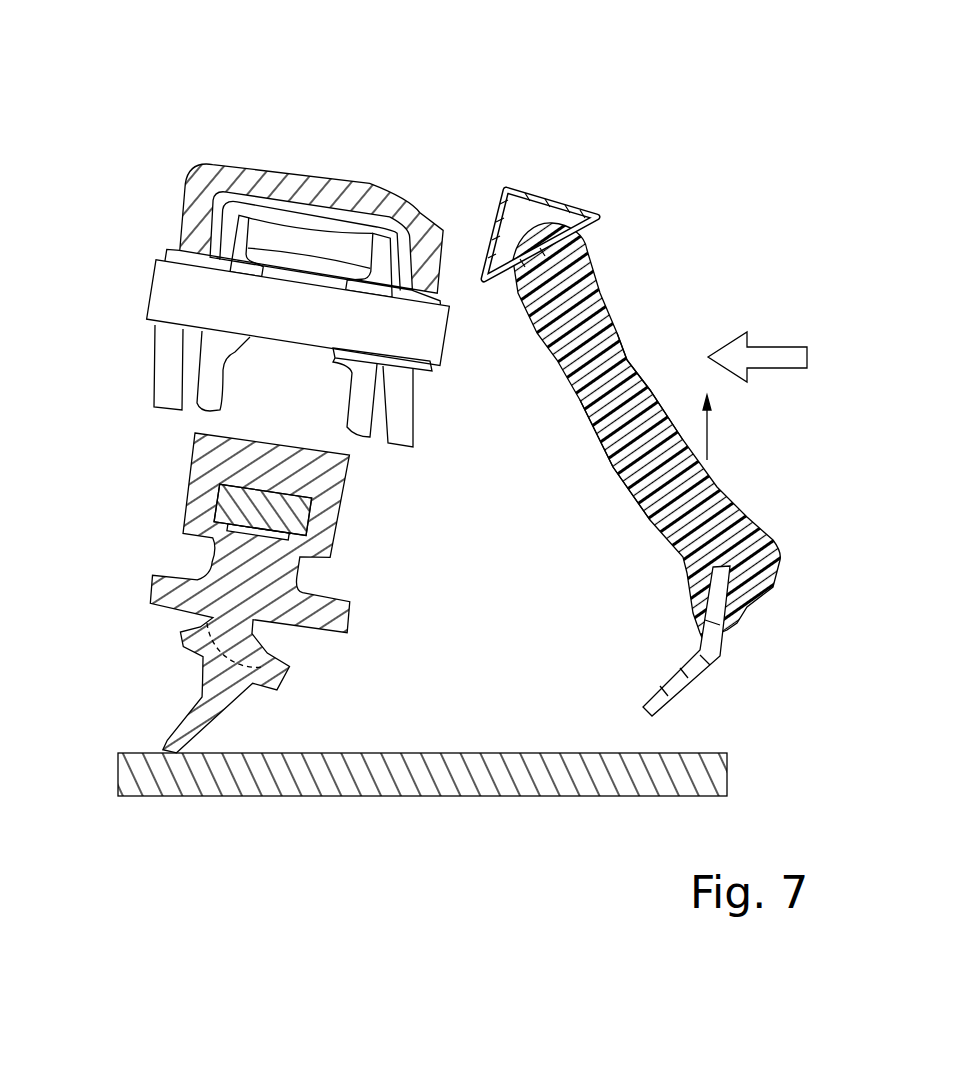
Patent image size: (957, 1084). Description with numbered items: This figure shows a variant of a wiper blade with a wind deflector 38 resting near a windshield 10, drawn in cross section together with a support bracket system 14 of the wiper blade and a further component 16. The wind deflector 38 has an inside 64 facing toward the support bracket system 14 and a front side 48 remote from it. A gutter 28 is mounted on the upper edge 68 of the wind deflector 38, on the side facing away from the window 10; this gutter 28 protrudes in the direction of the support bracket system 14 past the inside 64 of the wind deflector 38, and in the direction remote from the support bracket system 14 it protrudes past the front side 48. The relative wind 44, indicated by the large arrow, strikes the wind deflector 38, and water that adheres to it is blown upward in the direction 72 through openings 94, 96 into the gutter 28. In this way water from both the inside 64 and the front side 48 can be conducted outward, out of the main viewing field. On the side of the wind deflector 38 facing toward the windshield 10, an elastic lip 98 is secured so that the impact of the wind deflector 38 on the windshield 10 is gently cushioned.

The windshield 10 is at (157, 770).
The support bracket system 14 is at (191, 138).
The second clip member 16 is at (152, 519).
The gutter 28 is at (502, 183).
The wind deflector 38 is at (645, 302).
The relative wind 44 is at (777, 347).
The front side 48 is at (640, 383).
The inside 64 is at (623, 483).
The upper edge 68 is at (535, 208).
The direction 72 is at (707, 437).
The opening 94 is at (500, 275).
The opening 96 is at (590, 210).
The elastic lip 98 is at (717, 642).